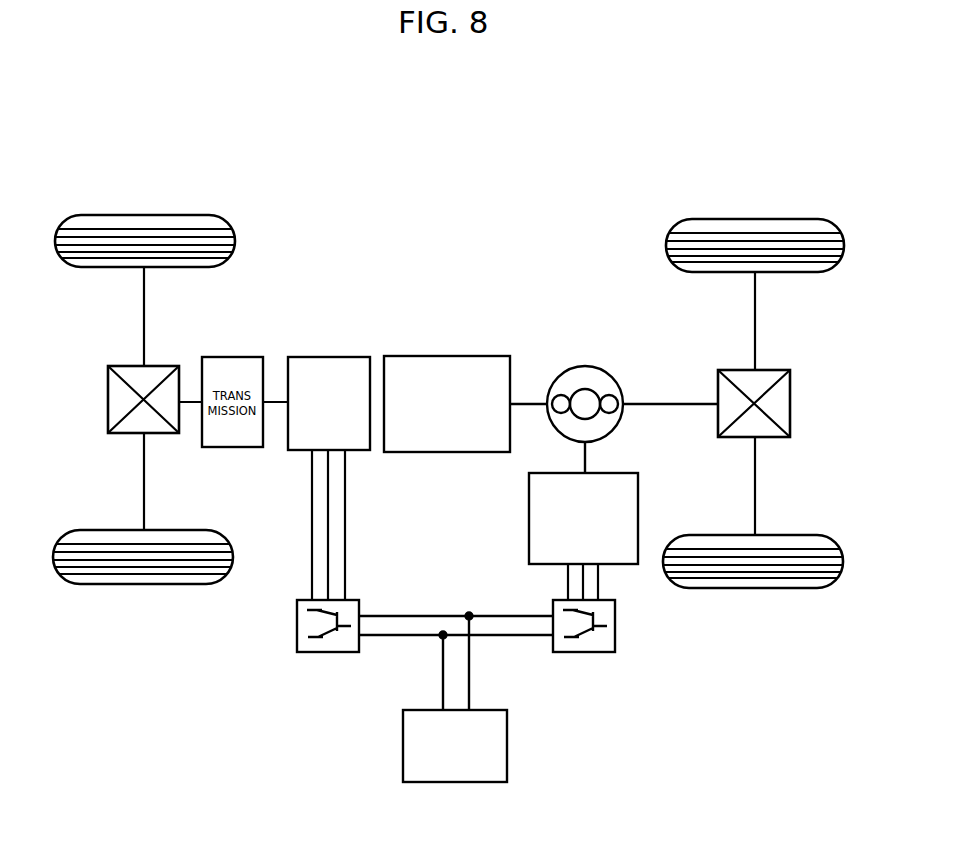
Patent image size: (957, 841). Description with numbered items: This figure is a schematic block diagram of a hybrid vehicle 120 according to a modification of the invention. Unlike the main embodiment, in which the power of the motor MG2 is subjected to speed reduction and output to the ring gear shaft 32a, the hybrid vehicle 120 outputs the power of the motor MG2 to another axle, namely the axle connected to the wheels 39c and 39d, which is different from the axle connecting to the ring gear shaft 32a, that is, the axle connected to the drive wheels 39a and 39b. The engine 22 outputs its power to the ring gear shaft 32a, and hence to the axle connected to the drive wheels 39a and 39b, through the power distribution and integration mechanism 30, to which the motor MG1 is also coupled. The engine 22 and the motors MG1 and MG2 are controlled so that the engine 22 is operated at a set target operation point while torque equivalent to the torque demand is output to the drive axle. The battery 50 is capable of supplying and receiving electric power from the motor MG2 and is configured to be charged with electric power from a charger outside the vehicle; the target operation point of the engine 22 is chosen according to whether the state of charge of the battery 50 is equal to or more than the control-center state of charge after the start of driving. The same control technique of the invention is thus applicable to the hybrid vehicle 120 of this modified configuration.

The hybrid vehicle 120 is at (490, 160).
The engine 22 is at (452, 356).
The power distribution and integration mechanism 30 is at (585, 366).
The ring gear shaft 32a is at (647, 404).
The drive wheel 39a is at (756, 219).
The drive wheel 39b is at (755, 592).
The wheel 39c is at (148, 215).
The wheel 39d is at (140, 587).
The battery 50 is at (507, 744).
The motor MG1 is at (529, 521).
The motor MG2 is at (333, 357).